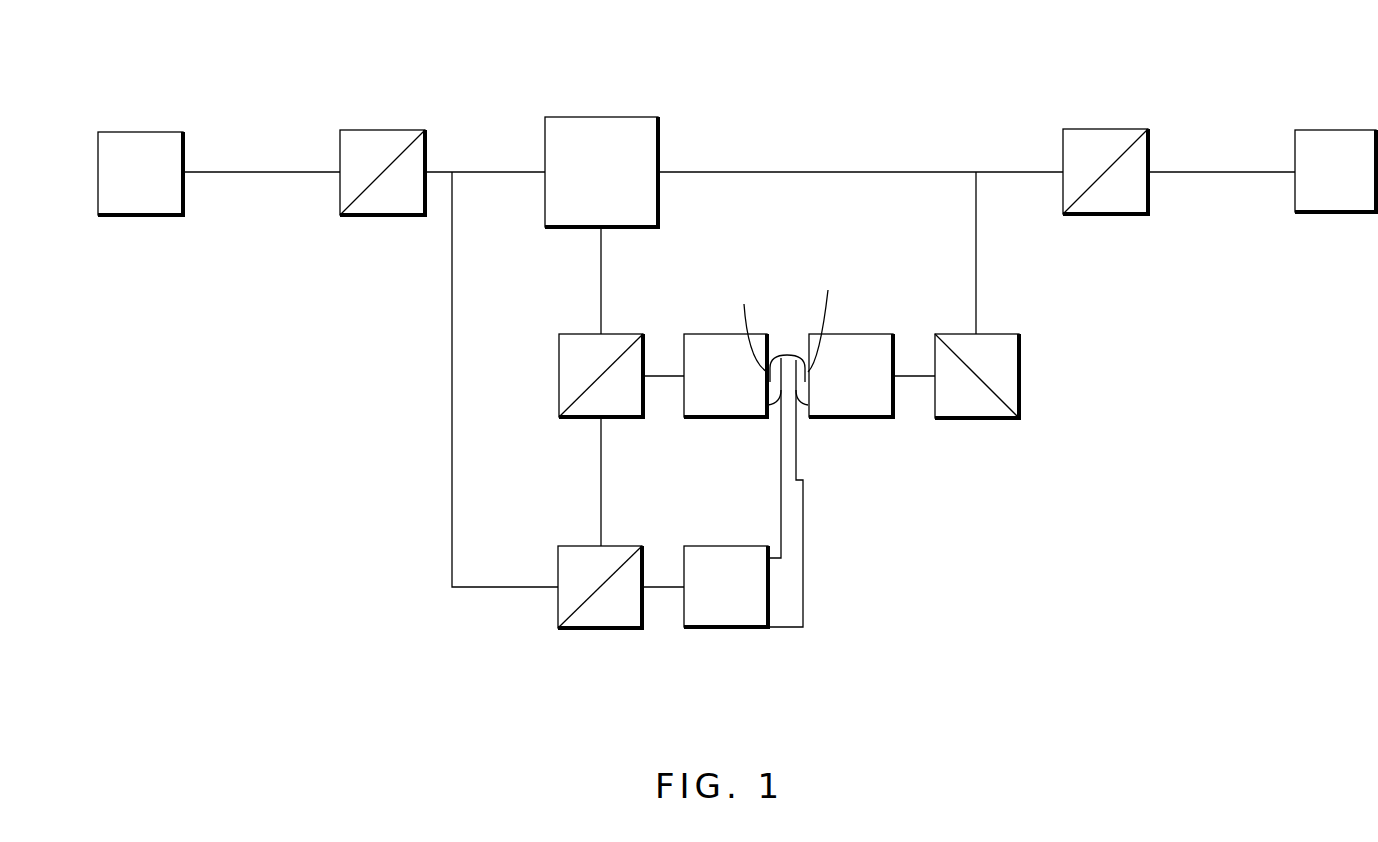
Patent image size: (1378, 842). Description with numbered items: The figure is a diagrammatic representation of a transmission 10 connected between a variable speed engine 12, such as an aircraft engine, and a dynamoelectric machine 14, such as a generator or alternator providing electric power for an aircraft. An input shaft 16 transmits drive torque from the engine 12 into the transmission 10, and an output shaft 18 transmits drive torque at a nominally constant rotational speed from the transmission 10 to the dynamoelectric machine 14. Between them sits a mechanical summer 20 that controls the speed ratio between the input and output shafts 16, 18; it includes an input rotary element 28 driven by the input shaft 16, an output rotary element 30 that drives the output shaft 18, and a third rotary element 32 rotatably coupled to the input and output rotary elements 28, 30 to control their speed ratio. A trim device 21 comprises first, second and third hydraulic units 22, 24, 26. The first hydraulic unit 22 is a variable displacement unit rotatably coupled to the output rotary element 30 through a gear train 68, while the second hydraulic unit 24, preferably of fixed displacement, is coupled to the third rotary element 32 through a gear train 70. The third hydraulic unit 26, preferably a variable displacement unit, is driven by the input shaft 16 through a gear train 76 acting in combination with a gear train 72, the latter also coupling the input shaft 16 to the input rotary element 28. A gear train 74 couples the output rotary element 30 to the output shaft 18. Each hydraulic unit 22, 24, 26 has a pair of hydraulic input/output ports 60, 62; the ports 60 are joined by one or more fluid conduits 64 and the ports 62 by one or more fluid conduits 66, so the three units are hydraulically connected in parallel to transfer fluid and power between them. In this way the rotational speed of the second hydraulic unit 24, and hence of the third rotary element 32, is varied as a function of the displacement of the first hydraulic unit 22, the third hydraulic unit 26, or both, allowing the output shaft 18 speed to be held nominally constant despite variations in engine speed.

The transmission 10 is at (822, 84).
The variable speed engine 12 is at (148, 131).
The dynamoelectric machine 14 is at (1312, 130).
The input shaft 16 is at (287, 174).
The output shaft 18 is at (1175, 173).
The mechanical summer 20 is at (587, 108).
The trim device 21 is at (968, 560).
The first hydraulic unit 22 is at (850, 326).
The second hydraulic unit 24 is at (715, 326).
The third hydraulic unit 26 is at (706, 536).
The input rotary element 28 is at (533, 170).
The output rotary element 30 is at (695, 170).
The third rotary element 32 is at (601, 228).
The hydraulic input/output port 60 is at (724, 660).
The hydraulic input/output port 62 is at (752, 418).
The fluid conduit 64 is at (785, 355).
The fluid conduit 66 is at (781, 392).
The gear train 68 is at (1030, 362).
The gear train 70 is at (558, 386).
The gear train 72 is at (366, 130).
The gear train 74 is at (1103, 128).
The gear train 76 is at (590, 630).